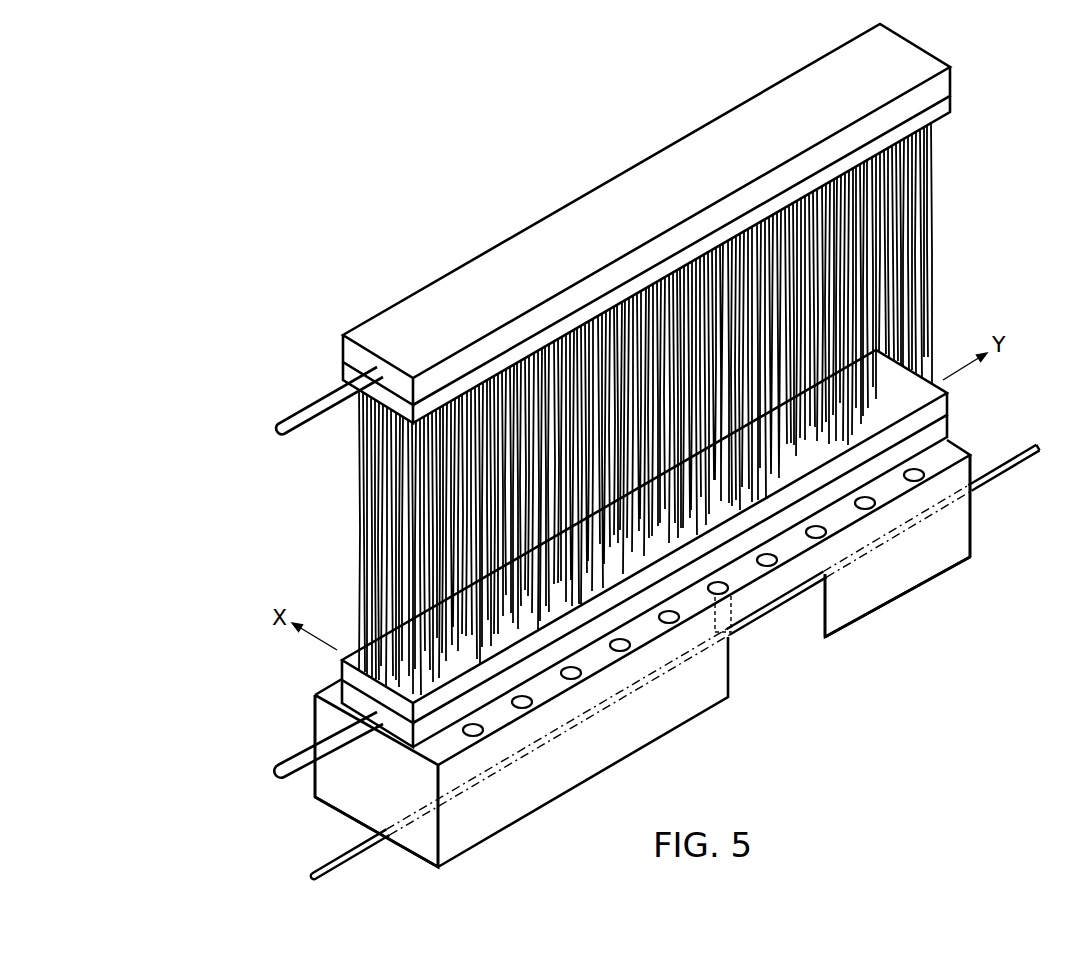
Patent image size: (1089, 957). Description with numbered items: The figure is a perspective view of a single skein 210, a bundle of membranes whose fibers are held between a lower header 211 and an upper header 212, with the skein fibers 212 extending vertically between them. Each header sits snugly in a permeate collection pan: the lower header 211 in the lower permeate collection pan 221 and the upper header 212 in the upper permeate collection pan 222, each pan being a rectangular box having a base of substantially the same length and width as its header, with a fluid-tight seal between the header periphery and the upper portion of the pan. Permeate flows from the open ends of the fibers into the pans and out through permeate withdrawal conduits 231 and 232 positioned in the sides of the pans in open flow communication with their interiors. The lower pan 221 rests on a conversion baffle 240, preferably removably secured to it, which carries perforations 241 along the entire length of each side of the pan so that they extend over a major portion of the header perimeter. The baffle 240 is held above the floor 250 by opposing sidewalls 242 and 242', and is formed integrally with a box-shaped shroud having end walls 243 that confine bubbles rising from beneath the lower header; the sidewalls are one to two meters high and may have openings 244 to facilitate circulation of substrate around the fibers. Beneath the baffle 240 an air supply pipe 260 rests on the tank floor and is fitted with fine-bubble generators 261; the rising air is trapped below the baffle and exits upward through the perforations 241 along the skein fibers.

The skein 210 is at (278, 667).
The lower header 211 is at (950, 398).
The upper header 212 is at (952, 100).
The lower permeate collection pan 221 is at (950, 420).
The upper permeate collection pan 222 is at (952, 77).
The permeate withdrawal conduit 231 is at (291, 755).
The permeate withdrawal conduit 232 is at (284, 416).
The conversion baffle 240 is at (1048, 452).
The perforations 241 is at (823, 527).
The sidewall 242 is at (1007, 506).
The sidewall 242' is at (277, 761).
The end wall 243 is at (348, 807).
The opening 244 is at (825, 637).
The floor 250 is at (926, 666).
The air supply pipe 260 is at (1028, 460).
The fine-bubble generators 261 is at (797, 683).